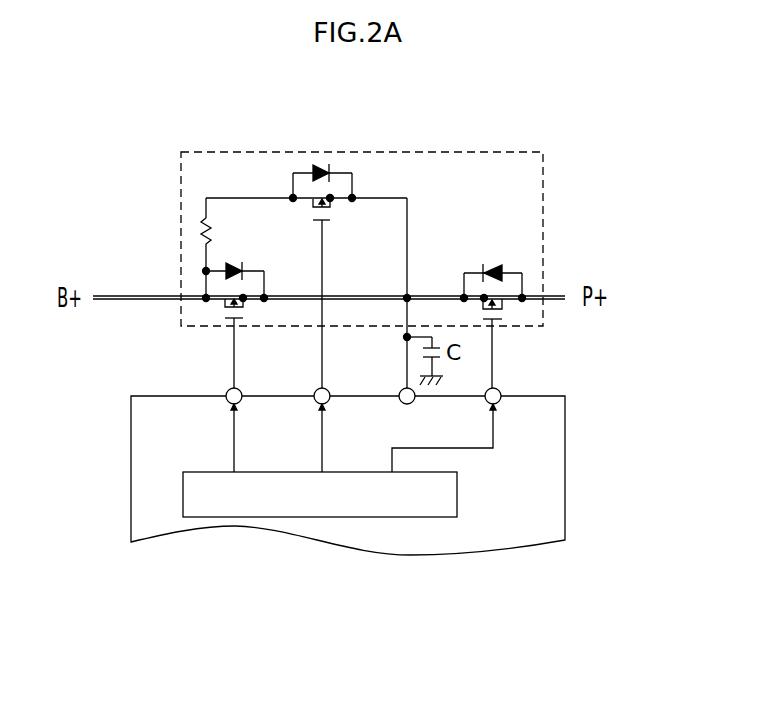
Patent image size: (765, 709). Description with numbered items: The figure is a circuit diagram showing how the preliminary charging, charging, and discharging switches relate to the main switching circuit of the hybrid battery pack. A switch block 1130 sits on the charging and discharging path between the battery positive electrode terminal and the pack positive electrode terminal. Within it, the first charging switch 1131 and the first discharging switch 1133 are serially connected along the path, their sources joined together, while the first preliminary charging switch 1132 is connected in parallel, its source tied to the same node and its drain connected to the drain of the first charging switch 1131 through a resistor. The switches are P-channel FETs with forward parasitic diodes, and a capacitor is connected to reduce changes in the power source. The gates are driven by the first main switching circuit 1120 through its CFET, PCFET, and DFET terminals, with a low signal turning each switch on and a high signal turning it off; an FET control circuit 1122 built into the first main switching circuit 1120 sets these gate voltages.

The FET module / protection circuit 1130 is at (360, 151).
The first charging switch 1131 is at (215, 305).
The first preliminary charging switch 1132 is at (338, 203).
The first discharging switch 1133 is at (507, 305).
The first main switching circuit 1120 is at (565, 465).
The FET control circuit 1122 is at (320, 517).